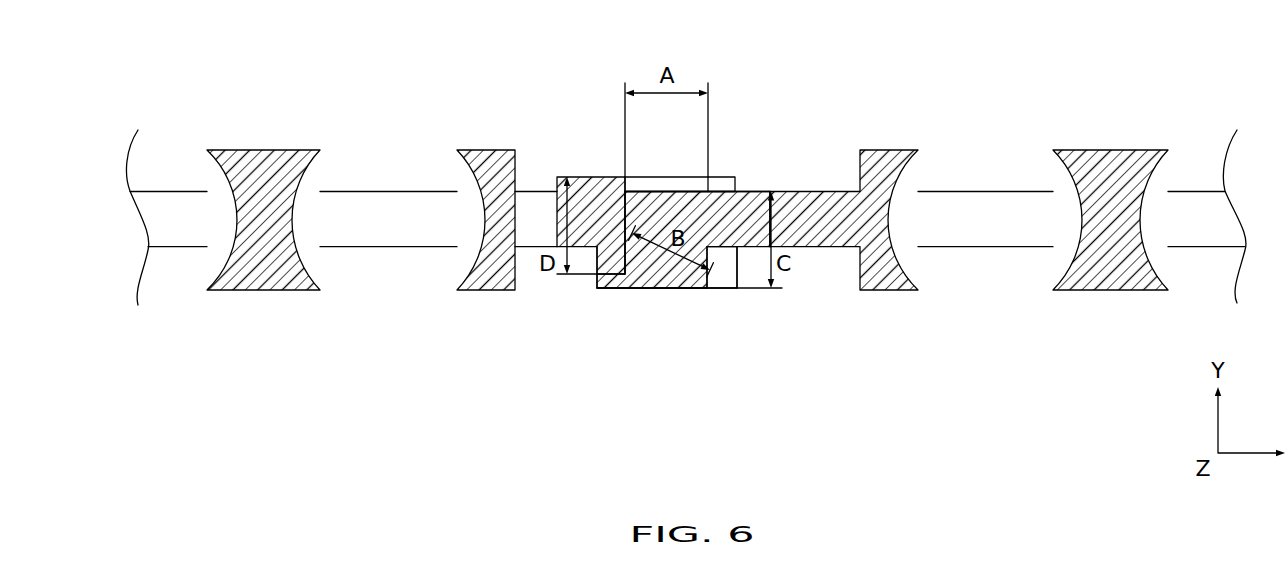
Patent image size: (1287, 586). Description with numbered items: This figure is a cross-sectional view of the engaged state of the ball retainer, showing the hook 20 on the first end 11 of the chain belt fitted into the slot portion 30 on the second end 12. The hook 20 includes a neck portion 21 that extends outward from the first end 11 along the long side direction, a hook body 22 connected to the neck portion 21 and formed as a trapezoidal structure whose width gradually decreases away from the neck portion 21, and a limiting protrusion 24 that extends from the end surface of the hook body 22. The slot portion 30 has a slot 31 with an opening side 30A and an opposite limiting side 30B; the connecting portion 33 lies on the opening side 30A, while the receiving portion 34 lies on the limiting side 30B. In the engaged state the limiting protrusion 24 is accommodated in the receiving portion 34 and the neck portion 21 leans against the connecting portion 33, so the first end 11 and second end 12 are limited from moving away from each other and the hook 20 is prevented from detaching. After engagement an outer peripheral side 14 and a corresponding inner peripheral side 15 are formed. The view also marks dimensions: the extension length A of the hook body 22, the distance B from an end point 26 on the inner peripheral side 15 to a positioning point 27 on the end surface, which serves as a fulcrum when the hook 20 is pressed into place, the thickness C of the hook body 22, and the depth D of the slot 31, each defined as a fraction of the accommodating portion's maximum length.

The first end 11 is at (823, 203).
The second end 12 is at (535, 189).
The outer peripheral side 14 is at (694, 223).
The inner peripheral side 15 is at (668, 386).
The hook 20 is at (726, 167).
The neck portion 21 is at (750, 212).
The hook body 22 is at (672, 262).
The limiting protrusion 24 is at (610, 288).
The end point 26 is at (709, 289).
The positioning point 27 is at (645, 288).
The slot portion 30 is at (583, 172).
The opening side 30A is at (736, 288).
The limiting side 30B is at (620, 223).
The slot 31 is at (678, 176).
The connecting portion 33 is at (723, 280).
The receiving portion 34 is at (597, 260).